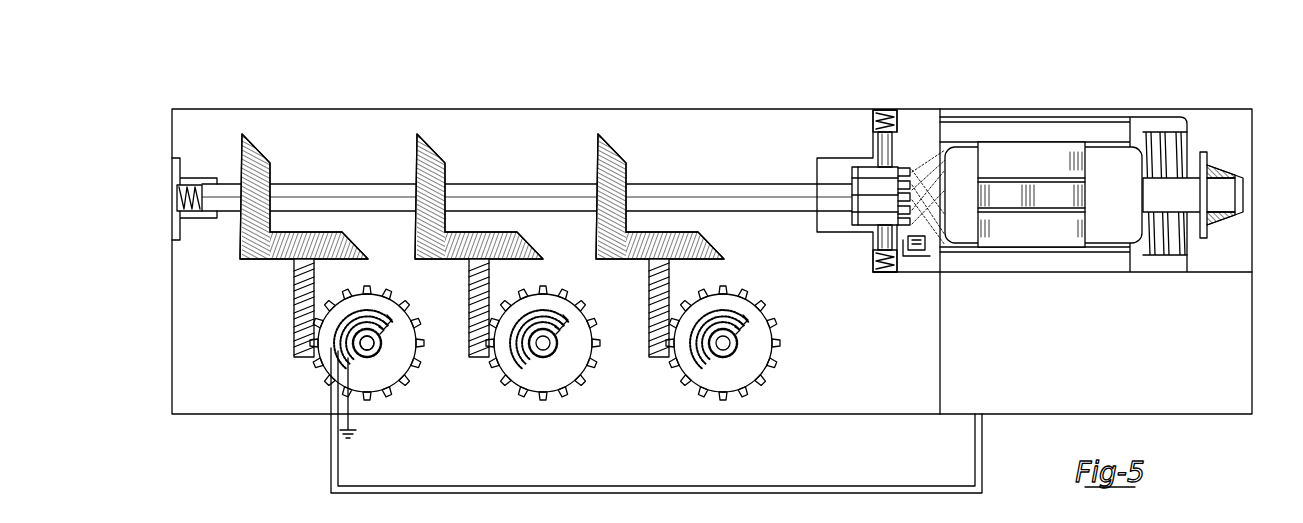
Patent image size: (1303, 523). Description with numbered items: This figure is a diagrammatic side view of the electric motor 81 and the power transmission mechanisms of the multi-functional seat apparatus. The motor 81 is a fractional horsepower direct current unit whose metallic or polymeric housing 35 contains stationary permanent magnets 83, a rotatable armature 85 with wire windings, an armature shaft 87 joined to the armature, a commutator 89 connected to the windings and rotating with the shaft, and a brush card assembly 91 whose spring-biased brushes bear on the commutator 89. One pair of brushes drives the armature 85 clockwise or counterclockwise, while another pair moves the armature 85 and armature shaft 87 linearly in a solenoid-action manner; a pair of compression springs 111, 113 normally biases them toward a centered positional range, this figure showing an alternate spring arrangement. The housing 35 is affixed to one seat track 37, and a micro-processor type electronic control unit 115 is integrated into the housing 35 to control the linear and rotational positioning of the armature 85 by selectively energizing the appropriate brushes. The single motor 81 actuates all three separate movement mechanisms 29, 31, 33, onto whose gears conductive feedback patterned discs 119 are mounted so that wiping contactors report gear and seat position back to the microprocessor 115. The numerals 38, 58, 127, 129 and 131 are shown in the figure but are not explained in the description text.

The movement mechanism 29 is at (503, 430).
The movement mechanism 31 is at (181, 277).
The movement mechanism 33 is at (810, 430).
The motor and powertrain housing 35 is at (1087, 137).
The seat track 37 is at (112, 4).
The element (off sheet) 38 is at (187, 0).
The element (off sheet) 58 is at (887, 5).
The electric motor 81 is at (1198, 126).
The permanent magnets 83 is at (1063, 130).
The armature 85 is at (1068, 167).
The armature shaft 87 is at (781, 192).
The commutator 89 is at (862, 187).
The brush card assembly 91 is at (882, 112).
The compression spring 111 is at (1180, 243).
The compression spring 113 is at (183, 187).
The electronic control unit 115 is at (1225, 385).
The feedback patterned disc 119 is at (383, 357).
The bevel gear 127 is at (625, 163).
The bevel gear 129 is at (432, 152).
The bevel gear 131 is at (258, 150).